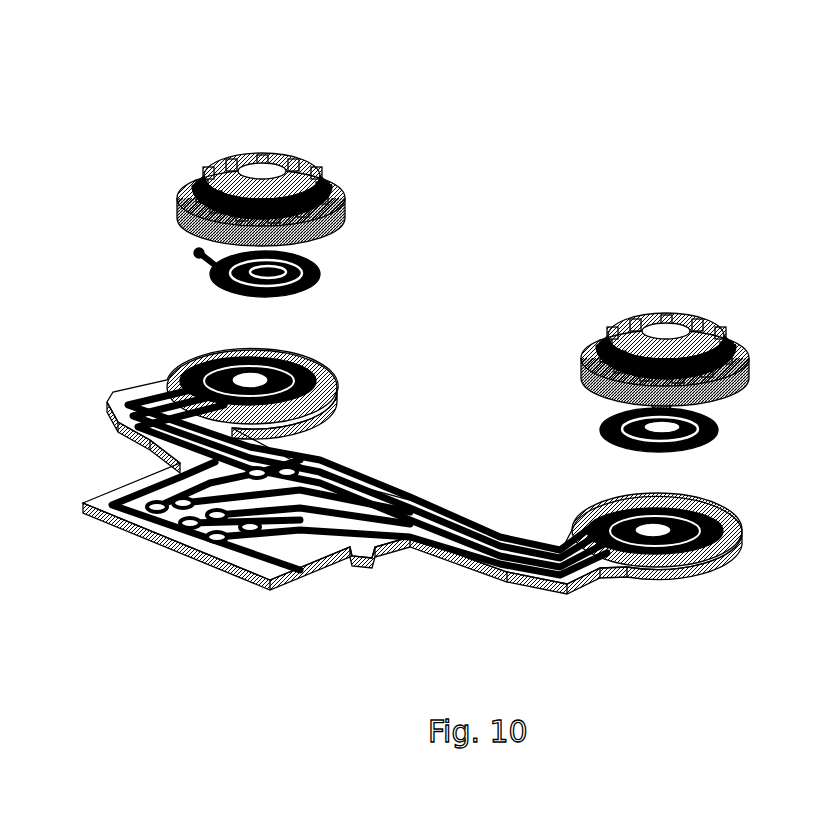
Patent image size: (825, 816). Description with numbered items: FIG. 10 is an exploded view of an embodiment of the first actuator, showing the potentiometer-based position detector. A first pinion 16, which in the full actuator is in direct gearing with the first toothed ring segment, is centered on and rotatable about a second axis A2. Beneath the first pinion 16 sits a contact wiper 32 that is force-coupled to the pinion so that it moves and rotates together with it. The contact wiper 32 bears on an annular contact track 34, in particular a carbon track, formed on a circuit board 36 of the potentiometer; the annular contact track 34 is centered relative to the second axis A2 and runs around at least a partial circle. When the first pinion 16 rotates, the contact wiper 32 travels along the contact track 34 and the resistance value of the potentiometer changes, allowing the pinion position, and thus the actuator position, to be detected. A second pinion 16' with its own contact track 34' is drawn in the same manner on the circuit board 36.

The second axis A2 is at (263, 168).
The first pinion 16 is at (282, 175).
The second rotary knob / gear wheel 16' is at (683, 343).
The contact wiper 32 is at (217, 273).
The annular contact track 34 is at (275, 355).
The second contact pad / sensor ring 34' is at (532, 451).
The circuit board 36 is at (270, 552).